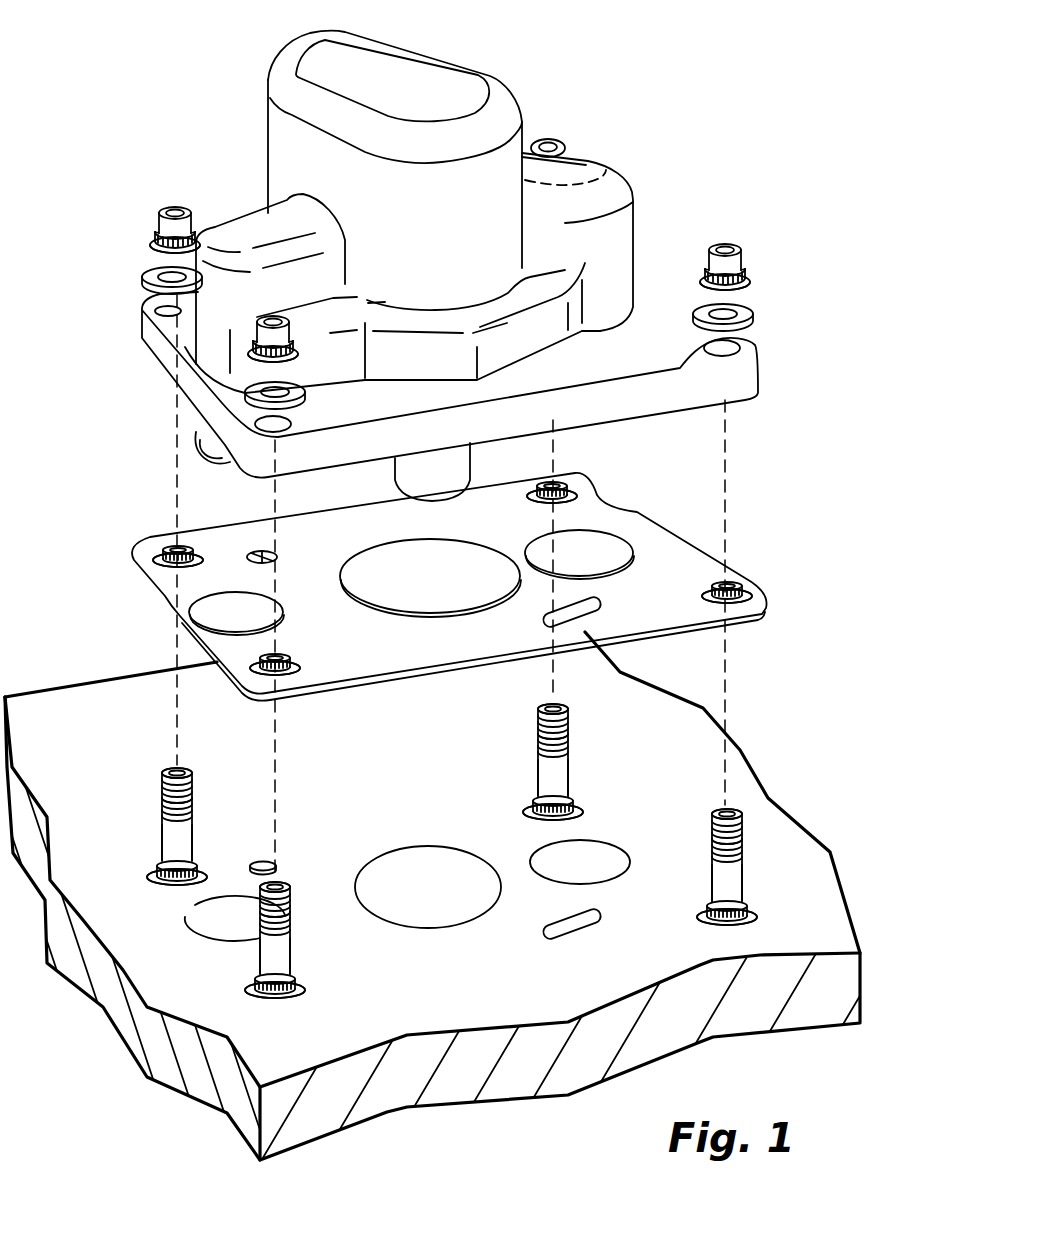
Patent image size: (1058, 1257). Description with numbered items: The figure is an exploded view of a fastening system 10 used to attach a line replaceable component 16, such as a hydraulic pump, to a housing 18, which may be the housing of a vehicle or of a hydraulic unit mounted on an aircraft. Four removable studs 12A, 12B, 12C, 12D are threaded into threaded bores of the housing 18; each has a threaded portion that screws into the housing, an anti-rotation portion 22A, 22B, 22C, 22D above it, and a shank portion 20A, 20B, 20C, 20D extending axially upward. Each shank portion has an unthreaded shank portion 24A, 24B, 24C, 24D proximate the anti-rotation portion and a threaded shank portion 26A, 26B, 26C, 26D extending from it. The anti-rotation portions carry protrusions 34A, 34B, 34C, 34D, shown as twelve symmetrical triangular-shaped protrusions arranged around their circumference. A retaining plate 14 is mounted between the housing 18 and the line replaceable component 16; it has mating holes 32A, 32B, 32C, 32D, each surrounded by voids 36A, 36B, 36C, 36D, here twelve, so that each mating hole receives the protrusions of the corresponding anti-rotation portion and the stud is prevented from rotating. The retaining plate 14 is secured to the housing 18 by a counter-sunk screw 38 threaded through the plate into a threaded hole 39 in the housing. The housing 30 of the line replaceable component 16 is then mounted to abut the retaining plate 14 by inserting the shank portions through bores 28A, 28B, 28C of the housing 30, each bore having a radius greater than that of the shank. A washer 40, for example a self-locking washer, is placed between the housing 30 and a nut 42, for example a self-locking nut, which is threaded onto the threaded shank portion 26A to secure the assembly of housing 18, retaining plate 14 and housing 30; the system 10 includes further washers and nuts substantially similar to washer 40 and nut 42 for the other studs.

The fastening system 10 is at (640, 95).
The removable stud 12A is at (262, 880).
The removable stud 12B is at (178, 768).
The removable stud 12C is at (730, 806).
The removable stud 12D is at (556, 705).
The retaining plate 14 is at (412, 647).
The line replaceable component 16 is at (440, 77).
The housing 18 is at (596, 988).
The shank portion 20A is at (258, 946).
The shank portion 20B is at (163, 827).
The shank portion 20C is at (708, 864).
The shank portion 20D is at (538, 763).
The anti-rotation portion 22A is at (300, 975).
The anti-rotation portion 22B is at (197, 862).
The anti-rotation portion 22C is at (752, 898).
The anti-rotation portion 22D is at (575, 798).
The unthreaded shank portion 24A is at (294, 937).
The unthreaded shank portion 24B is at (196, 821).
The unthreaded shank portion 24C is at (748, 860).
The unthreaded shank portion 24D is at (572, 758).
The threaded shank portion 26A is at (303, 896).
The threaded shank portion 26B is at (196, 786).
The threaded shank portion 26C is at (750, 822).
The threaded shank portion 26D is at (572, 722).
The bore 28A is at (303, 410).
The bore 28B is at (143, 307).
The bore 28C is at (760, 342).
The housing of line replaceable component 30 is at (657, 312).
The mating hole 32A is at (299, 667).
The mating hole 32B is at (185, 545).
The mating hole 32C is at (768, 587).
The mating hole 32D is at (575, 506).
The protrusions 34A is at (255, 992).
The protrusions 34B is at (154, 887).
The protrusions 34C is at (700, 923).
The protrusions 34D is at (530, 815).
The voids 36A is at (298, 654).
The voids 36B is at (158, 542).
The voids 36C is at (744, 573).
The voids 36D is at (572, 478).
The counter-sunk screw 38 is at (265, 550).
The threaded hole 39 is at (278, 862).
The washer 40 is at (302, 378).
The nut 42 is at (297, 340).